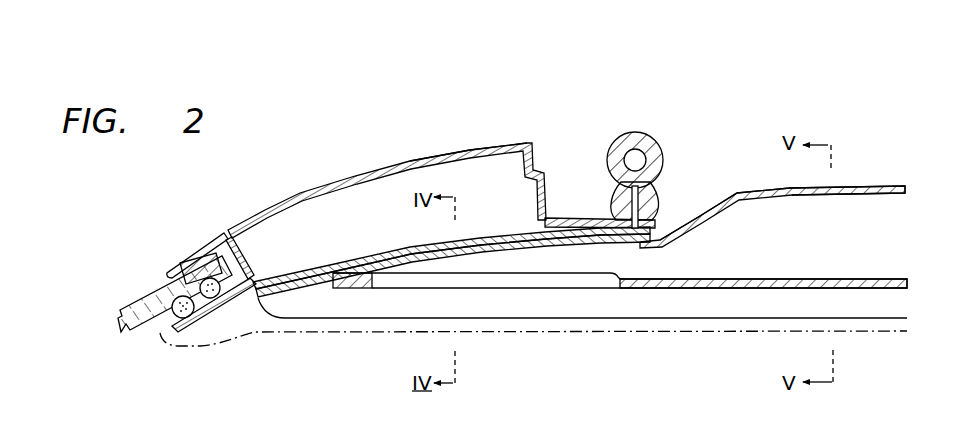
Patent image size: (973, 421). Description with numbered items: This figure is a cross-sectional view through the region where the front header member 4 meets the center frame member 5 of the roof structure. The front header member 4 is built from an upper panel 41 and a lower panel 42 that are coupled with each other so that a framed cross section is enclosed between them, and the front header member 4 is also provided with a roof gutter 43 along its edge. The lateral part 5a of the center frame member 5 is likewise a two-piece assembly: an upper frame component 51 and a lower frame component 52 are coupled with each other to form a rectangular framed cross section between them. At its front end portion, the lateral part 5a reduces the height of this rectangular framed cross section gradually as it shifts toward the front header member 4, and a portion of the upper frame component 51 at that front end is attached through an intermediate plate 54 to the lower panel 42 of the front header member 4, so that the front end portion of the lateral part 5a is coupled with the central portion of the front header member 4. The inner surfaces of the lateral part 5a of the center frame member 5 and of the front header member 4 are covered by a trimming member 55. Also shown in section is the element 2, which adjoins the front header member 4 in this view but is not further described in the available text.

The window glass 2 is at (137, 301).
The front header member 4 is at (352, 172).
The upper panel 41 is at (467, 152).
The lower panel 42 is at (353, 257).
The roof gutter 43 is at (568, 217).
The center frame member 5 is at (892, 180).
The lateral part 5a is at (737, 189).
The upper frame component 51 is at (858, 188).
The lower frame component 52 is at (870, 289).
The intermediate plate 54 is at (492, 234).
The trimming member 55 is at (315, 333).